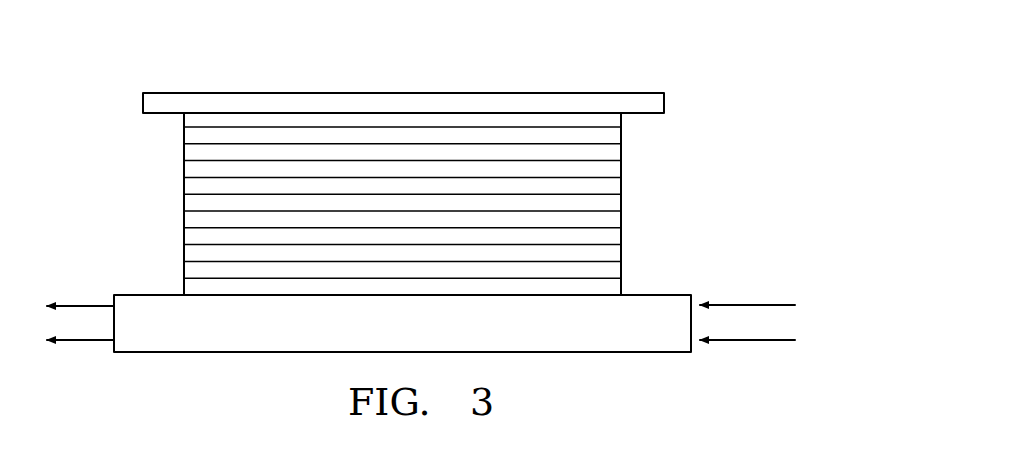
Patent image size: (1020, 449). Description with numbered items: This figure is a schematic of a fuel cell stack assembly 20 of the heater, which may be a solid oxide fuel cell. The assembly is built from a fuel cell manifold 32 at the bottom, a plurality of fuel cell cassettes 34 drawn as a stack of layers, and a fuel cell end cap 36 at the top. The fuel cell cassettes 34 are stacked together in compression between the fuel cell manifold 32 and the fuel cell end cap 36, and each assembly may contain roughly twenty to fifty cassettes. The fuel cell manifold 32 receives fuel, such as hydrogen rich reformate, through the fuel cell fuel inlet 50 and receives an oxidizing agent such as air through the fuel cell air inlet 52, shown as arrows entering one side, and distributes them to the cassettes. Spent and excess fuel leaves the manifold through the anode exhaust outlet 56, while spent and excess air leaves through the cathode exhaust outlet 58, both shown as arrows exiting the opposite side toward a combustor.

The fuel cell stack assembly 20 is at (646, 58).
The fuel cell manifold 32 is at (575, 333).
The fuel cell cassettes 34 is at (605, 151).
The fuel cell end cap 36 is at (148, 104).
The fuel cell fuel inlet 50 is at (694, 299).
The fuel cell air inlet 52 is at (694, 349).
The anode exhaust outlet 56 is at (113, 300).
The cathode exhaust outlet 58 is at (113, 346).